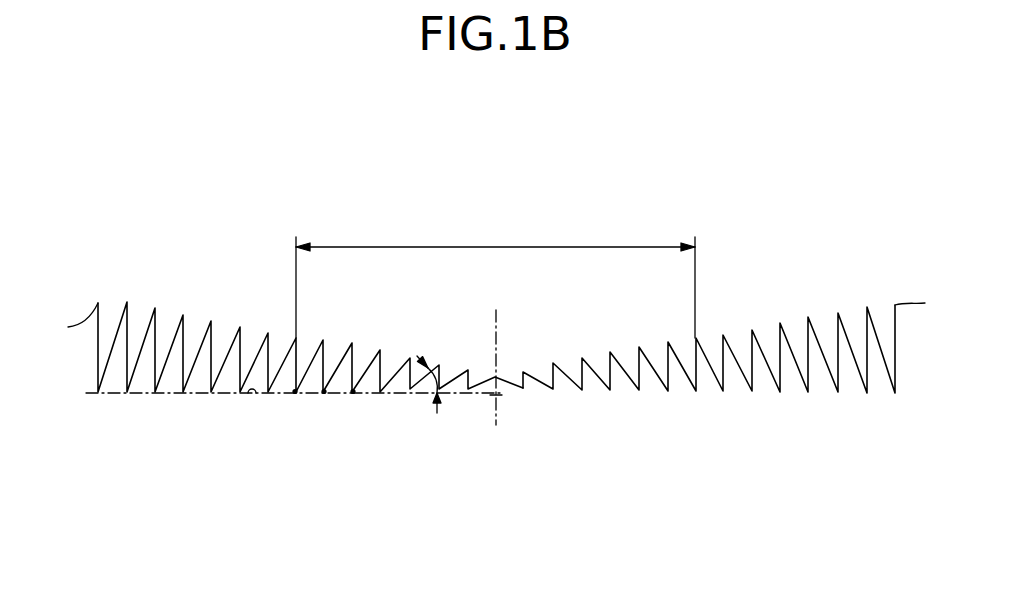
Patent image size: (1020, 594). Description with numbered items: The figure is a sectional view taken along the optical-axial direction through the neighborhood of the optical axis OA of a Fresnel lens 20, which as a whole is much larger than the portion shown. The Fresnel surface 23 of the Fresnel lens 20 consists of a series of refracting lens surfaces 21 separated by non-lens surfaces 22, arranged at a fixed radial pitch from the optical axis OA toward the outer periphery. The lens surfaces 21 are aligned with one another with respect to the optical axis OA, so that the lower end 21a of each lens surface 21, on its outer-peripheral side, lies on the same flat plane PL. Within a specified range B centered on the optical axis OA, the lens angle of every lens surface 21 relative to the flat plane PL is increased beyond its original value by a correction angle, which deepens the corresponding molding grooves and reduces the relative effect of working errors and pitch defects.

The Fresnel lens 20 is at (228, 201).
The lens surface 21 is at (370, 362).
The non-lens surface 22 is at (395, 357).
The Fresnel surface 23 is at (734, 312).
The lower end of lens surface 21a is at (295, 392).
The flat plane PL is at (247, 400).
The optical axis OA is at (497, 331).
The specified range B is at (495, 277).